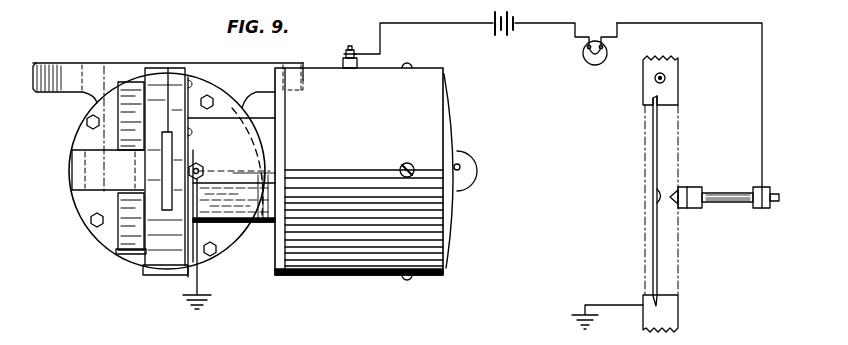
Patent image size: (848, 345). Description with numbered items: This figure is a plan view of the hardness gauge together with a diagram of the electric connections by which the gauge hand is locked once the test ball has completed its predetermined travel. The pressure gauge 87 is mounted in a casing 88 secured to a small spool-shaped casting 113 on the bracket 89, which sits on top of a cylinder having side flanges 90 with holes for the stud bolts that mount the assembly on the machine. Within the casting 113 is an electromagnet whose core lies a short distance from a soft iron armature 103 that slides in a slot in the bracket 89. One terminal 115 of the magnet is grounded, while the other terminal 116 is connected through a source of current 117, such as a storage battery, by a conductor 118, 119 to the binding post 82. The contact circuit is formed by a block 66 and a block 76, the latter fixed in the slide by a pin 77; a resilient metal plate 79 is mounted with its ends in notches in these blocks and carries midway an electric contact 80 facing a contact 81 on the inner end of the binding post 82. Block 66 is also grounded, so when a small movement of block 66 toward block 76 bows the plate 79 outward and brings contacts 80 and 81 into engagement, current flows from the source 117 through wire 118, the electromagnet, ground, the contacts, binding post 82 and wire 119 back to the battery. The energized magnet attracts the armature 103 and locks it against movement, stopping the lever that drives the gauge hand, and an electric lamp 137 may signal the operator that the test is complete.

The block 66 is at (679, 305).
The block 76 is at (679, 88).
The pin 77 is at (655, 78).
The resilient metal plate 79 is at (658, 143).
The electric contact 80 is at (660, 194).
The contact 81 is at (671, 204).
The binding post 82 is at (778, 197).
The pressure gauge 87 is at (460, 194).
The casing 88 is at (364, 171).
The bracket 89 is at (88, 216).
The side flanges 90 is at (253, 63).
The soft iron armature 103 is at (172, 160).
The spool-shaped casting 113 is at (244, 225).
The magnet terminal 115 is at (204, 167).
The magnet terminal 116 is at (349, 47).
The source of current 117 is at (507, 35).
The conductor 118 is at (446, 26).
The conductor 119 is at (720, 21).
The electric lamp 137 is at (596, 66).